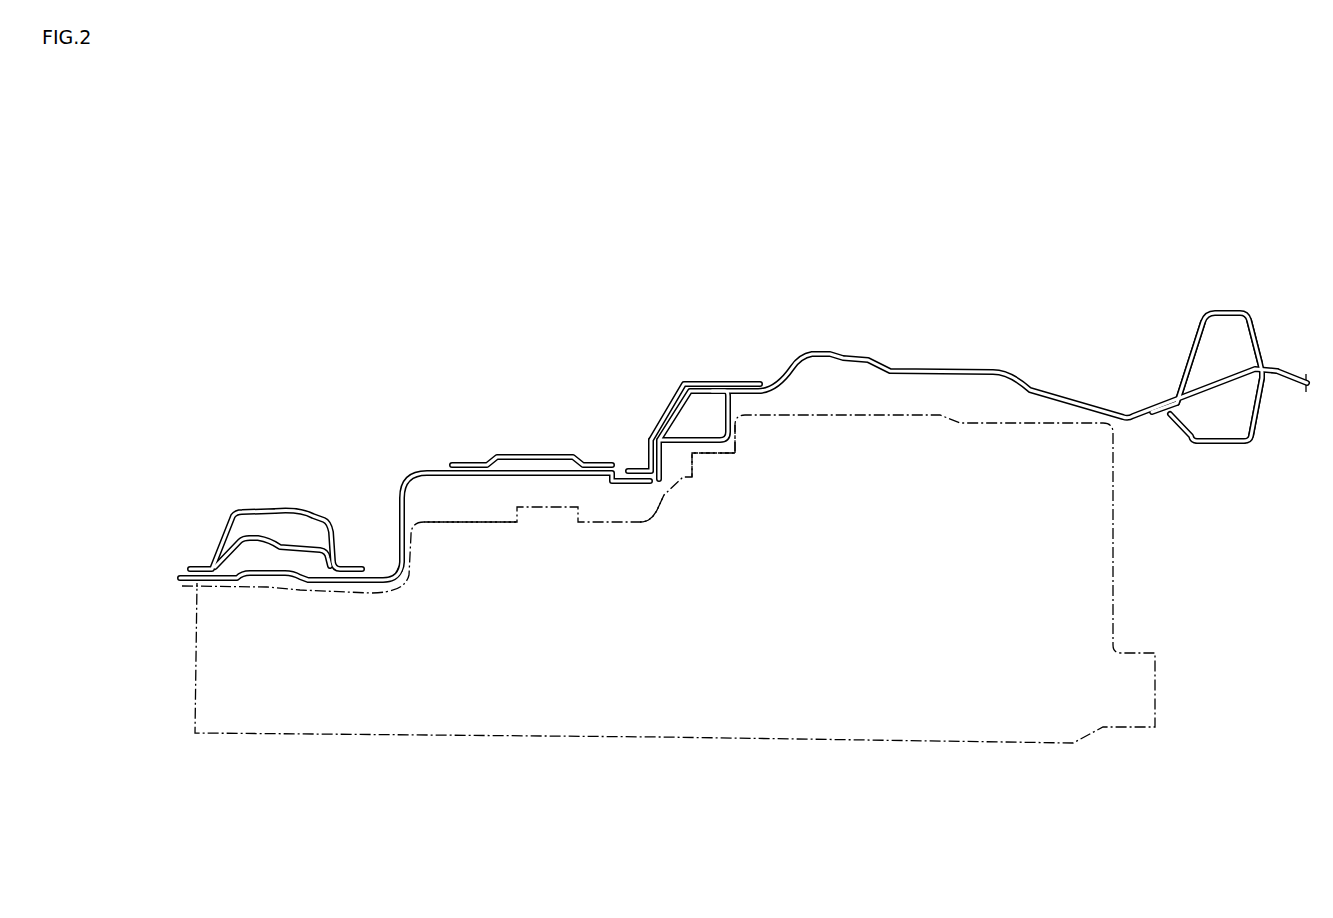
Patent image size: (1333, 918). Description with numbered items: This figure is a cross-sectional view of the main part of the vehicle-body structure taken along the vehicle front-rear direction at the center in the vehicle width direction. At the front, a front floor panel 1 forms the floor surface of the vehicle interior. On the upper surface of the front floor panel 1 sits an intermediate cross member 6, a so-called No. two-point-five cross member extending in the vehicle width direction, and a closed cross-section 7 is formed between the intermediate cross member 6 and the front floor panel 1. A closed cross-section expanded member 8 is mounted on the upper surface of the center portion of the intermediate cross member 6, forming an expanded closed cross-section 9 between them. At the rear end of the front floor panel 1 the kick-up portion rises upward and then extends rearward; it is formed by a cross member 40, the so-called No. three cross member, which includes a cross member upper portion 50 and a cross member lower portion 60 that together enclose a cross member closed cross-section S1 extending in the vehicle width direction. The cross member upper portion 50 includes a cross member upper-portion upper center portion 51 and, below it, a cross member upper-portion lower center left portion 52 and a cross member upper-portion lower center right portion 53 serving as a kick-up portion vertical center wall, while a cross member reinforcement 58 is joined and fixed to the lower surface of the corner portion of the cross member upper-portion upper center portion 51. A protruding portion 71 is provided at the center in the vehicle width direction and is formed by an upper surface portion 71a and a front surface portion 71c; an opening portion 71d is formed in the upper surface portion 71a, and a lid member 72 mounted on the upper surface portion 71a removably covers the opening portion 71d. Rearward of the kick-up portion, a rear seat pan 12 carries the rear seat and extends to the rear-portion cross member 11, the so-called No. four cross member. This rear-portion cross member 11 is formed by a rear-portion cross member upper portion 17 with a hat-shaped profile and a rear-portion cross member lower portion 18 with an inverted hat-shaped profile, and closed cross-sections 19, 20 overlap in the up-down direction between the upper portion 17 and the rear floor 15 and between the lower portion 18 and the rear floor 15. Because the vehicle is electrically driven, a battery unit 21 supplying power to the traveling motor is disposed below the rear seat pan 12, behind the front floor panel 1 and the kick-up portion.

The front floor panel 1 is at (287, 577).
The intermediate cross member 6 is at (282, 546).
The closed cross-section 7 is at (242, 560).
The closed cross-section expanded member 8 is at (295, 512).
The expanded closed cross-section 9 is at (243, 520).
The rear-portion cross member 11 is at (1230, 303).
The rear seat pan 12 is at (913, 370).
The rear floor 15 is at (1285, 380).
The rear-portion cross member upper portion 17 is at (1260, 330).
The rear-portion cross member lower portion 18 is at (1257, 407).
The closed cross-section 19 is at (1200, 358).
The closed cross-section 20 is at (1217, 430).
The battery unit 21 is at (697, 738).
The cross member 40 is at (715, 358).
The cross member upper portion 50 is at (668, 382).
The cross member upper-portion upper center portion 51 is at (693, 377).
The cross member upper-portion lower center left portion 52 is at (647, 478).
The cross member upper-portion lower center right portion 53 is at (650, 435).
The cross member reinforcement 58 is at (682, 400).
The cross member lower portion 60 is at (732, 443).
The protruding portion 71 is at (405, 478).
The upper surface portion 71a is at (438, 470).
The front surface portion 71c is at (400, 513).
The opening portion 71d is at (505, 480).
The lid member 72 is at (532, 455).
The cross member closed cross-section S1 is at (678, 432).